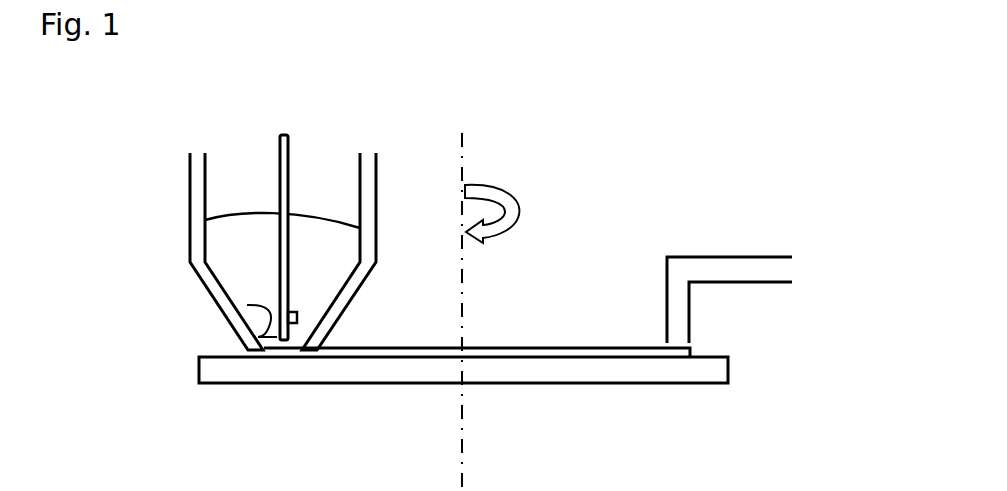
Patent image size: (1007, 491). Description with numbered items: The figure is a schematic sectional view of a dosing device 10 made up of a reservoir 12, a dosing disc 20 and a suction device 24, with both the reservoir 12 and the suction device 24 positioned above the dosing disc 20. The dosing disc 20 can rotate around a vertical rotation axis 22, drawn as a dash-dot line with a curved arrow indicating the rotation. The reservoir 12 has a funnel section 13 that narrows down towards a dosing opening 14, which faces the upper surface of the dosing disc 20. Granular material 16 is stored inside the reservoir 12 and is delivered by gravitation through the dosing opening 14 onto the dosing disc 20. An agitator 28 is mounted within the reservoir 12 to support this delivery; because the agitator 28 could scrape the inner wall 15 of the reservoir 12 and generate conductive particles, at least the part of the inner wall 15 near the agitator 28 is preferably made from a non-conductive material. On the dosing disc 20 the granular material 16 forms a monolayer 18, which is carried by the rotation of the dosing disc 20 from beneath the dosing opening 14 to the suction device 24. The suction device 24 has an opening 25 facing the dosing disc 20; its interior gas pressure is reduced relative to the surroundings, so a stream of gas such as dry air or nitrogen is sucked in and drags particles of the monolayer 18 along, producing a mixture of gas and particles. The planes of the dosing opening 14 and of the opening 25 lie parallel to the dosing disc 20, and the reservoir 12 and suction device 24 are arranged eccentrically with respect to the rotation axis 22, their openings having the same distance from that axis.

The dosing device 10 is at (692, 101).
The reservoir 12 is at (240, 205).
The funnel section 13 is at (212, 285).
The dosing opening 14 is at (303, 348).
The inner wall 15 is at (247, 305).
The granular material 16 is at (240, 258).
The monolayer 18 is at (590, 348).
The dosing disc 20 is at (705, 368).
The rotation axis 22 is at (462, 157).
The suction device 24 is at (776, 262).
The opening 25 is at (680, 342).
The agitator 28 is at (279, 136).